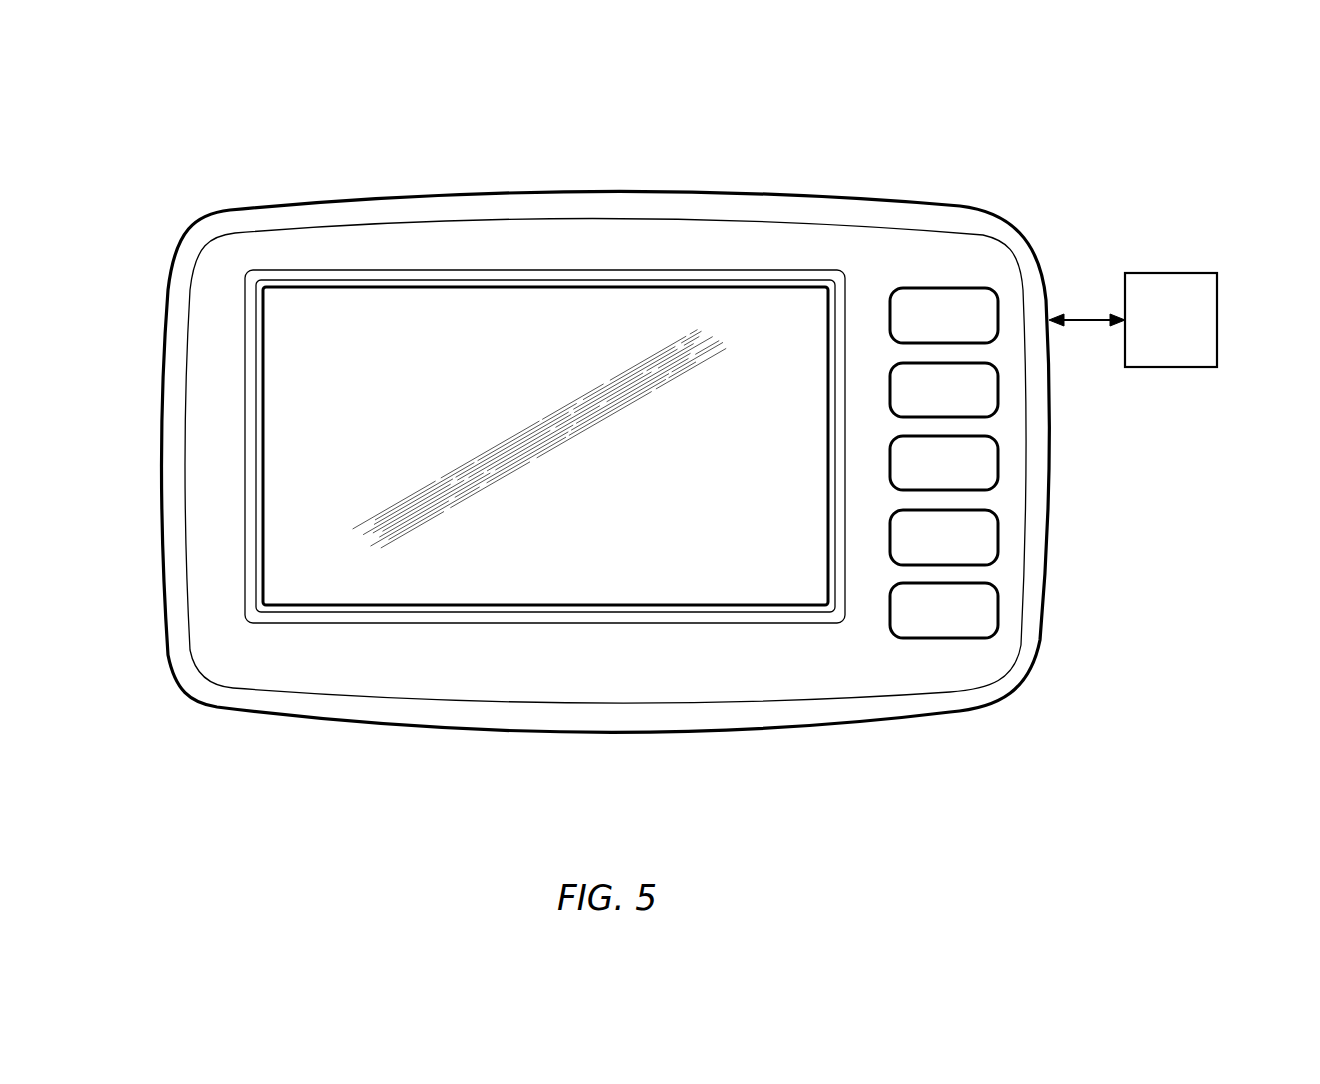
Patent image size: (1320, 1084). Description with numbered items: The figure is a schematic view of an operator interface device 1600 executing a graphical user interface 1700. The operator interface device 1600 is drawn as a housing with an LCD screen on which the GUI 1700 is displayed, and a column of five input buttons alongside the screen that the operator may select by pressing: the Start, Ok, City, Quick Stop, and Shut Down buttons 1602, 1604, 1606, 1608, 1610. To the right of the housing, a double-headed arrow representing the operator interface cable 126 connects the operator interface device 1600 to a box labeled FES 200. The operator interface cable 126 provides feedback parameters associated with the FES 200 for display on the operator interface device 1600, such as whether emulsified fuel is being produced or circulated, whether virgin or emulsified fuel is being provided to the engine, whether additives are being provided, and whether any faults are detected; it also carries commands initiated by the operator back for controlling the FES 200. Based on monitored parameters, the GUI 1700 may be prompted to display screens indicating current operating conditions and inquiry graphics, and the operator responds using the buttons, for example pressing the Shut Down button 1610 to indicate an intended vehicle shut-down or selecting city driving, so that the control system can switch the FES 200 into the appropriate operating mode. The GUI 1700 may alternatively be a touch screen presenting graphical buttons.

The operator interface device 1600 is at (205, 143).
The graphical user interface 1700 is at (360, 573).
The Start button 1602 is at (965, 290).
The Ok button 1604 is at (998, 390).
The City button 1606 is at (998, 465).
The Quick Stop button 1608 is at (998, 543).
The Shut Down button 1610 is at (998, 618).
The operator interface cable 126 is at (1075, 316).
The FES 200 is at (1207, 273).